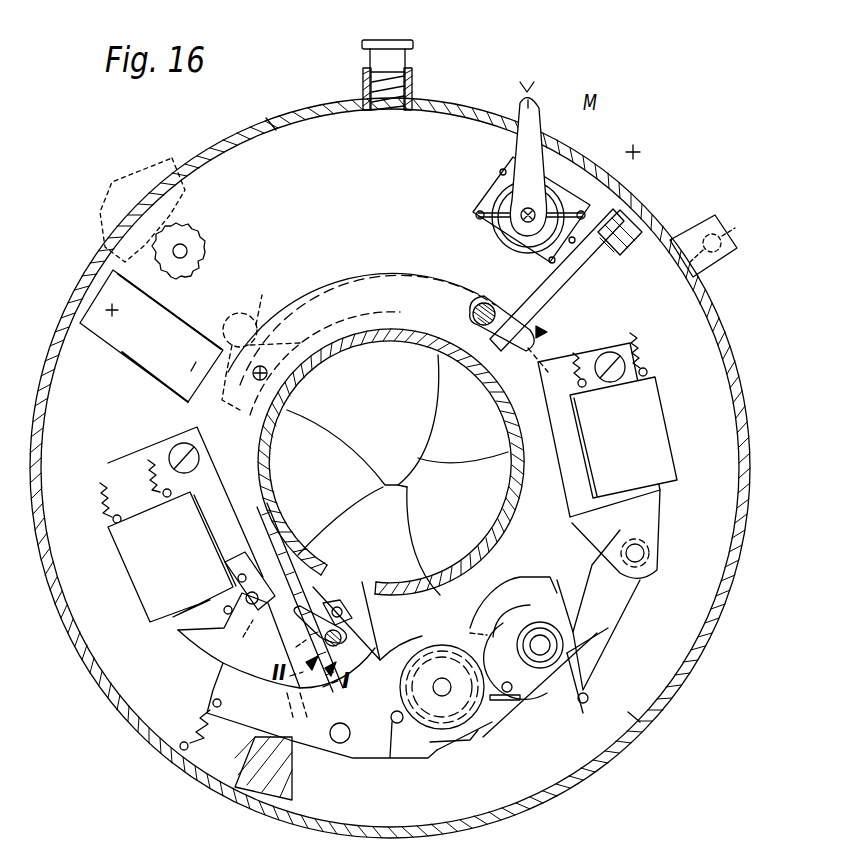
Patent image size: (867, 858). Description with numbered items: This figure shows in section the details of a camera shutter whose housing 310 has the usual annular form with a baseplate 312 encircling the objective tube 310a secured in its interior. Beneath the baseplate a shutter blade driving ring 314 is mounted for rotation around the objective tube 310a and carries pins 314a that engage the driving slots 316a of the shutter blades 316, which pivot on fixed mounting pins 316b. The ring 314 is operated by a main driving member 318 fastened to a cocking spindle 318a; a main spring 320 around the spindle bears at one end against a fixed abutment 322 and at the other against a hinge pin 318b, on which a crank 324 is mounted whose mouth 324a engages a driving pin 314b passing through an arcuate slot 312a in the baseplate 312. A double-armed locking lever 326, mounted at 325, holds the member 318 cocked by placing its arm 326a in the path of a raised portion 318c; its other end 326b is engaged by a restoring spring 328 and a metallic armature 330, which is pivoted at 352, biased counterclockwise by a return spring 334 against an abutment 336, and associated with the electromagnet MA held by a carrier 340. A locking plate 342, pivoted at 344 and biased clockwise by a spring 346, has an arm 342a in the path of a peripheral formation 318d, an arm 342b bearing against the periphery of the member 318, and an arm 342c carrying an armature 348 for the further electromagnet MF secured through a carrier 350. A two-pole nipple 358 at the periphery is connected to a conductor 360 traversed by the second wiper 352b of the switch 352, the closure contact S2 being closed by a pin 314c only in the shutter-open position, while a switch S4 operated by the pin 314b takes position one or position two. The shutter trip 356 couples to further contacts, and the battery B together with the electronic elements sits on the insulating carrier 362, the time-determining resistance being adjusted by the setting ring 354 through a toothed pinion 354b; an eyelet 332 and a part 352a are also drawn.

The housing 310 is at (687, 667).
The objective tube 310a is at (512, 495).
The baseplate 312 is at (640, 722).
The arcuate slot 312a is at (322, 590).
The shutter blade driving ring 314 is at (340, 280).
The pins 314a is at (394, 352).
The driving pin 314b is at (282, 644).
The pin 314c is at (475, 337).
The shutter blades 316 is at (356, 450).
The driving slots 316a is at (286, 413).
The fixed mounting pins 316b is at (242, 320).
The main driving member 318 is at (494, 748).
The cocking spindle 318a is at (442, 680).
The hinge pin 318b is at (391, 760).
The raised portion 318c is at (458, 748).
The peripheral formation 318d is at (446, 578).
The main spring 320 is at (510, 703).
The fixed abutment 322 is at (580, 715).
The crank 324 is at (385, 652).
The mouth 324a is at (360, 600).
The mounting of locking lever 325 is at (283, 768).
The locking lever 326 is at (352, 758).
The arm 326a is at (437, 752).
The other end 326b is at (211, 688).
The restoring spring 328 is at (208, 732).
The armature 330 is at (178, 634).
The eyelet 332 is at (282, 541).
The return spring 334 is at (232, 576).
The abutment 336 is at (246, 640).
The carrier 340 is at (160, 443).
The locking plate 342 is at (590, 655).
The arm 342a is at (491, 638).
The arm 342b is at (508, 737).
The arm 342c is at (630, 590).
The pivot mounting 344 is at (545, 638).
The spring 346 is at (608, 628).
The armature 348 is at (656, 516).
The carrier 350 is at (589, 354).
The switch 352 is at (535, 112).
The axle 352a is at (480, 212).
The second wiper 352b is at (622, 200).
The setting ring 354 is at (134, 185).
The toothed pinion 354b is at (206, 250).
The shutter trip 356 is at (386, 44).
The two-pole nipple 358 is at (732, 262).
The conductor 360 is at (520, 256).
The carrier 362 is at (272, 125).
The battery B is at (128, 350).
The electromagnet MA is at (128, 563).
The electromagnet MF is at (655, 420).
The closure contact S2 is at (590, 282).
The switch S4 is at (290, 700).